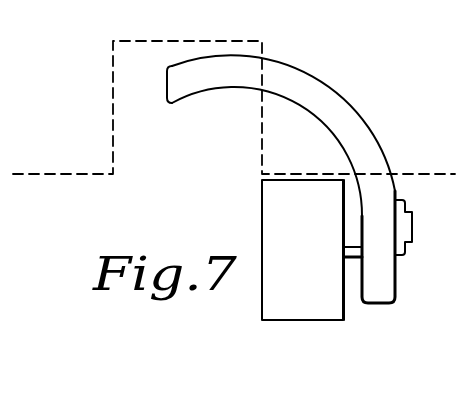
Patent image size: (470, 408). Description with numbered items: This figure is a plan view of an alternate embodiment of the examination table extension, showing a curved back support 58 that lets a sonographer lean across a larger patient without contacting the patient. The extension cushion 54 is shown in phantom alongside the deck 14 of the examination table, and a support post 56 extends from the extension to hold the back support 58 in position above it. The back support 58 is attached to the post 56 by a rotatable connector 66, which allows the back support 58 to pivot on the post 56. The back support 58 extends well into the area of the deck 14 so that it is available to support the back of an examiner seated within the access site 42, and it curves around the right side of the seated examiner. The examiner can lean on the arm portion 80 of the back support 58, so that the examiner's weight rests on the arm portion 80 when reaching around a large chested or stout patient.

The deck 14 is at (45, 174).
The access site 42 is at (208, 108).
The extension cushion 54 is at (290, 290).
The support post 56 is at (352, 247).
The back support 58 is at (317, 102).
The rotatable connector 66 is at (403, 227).
The arm portion 80 is at (173, 62).